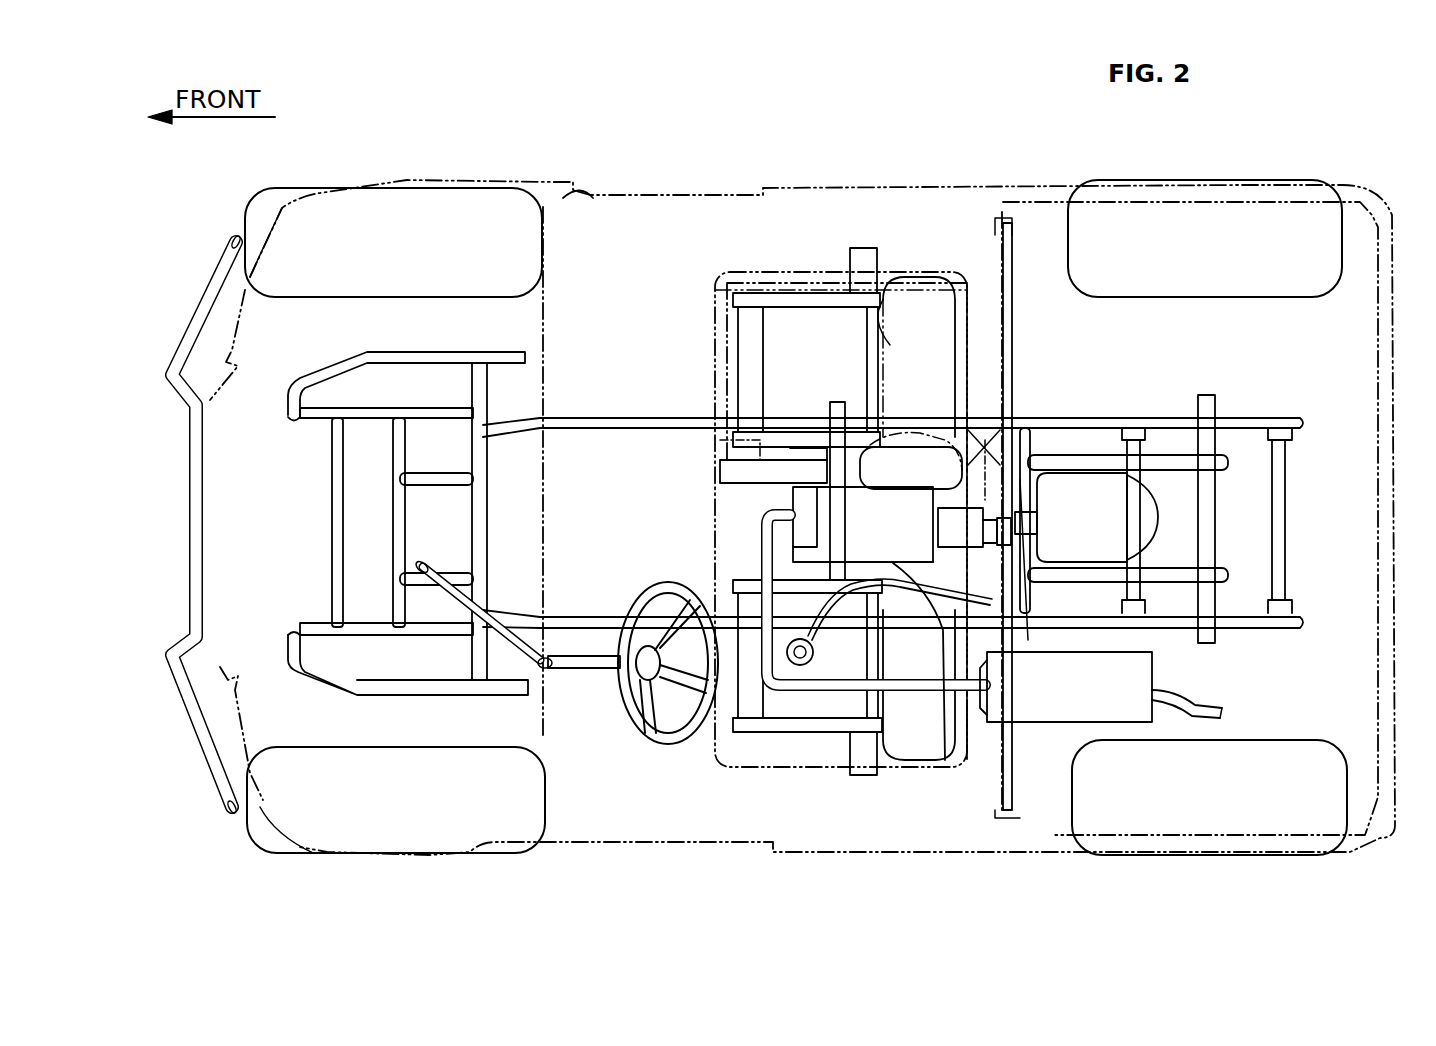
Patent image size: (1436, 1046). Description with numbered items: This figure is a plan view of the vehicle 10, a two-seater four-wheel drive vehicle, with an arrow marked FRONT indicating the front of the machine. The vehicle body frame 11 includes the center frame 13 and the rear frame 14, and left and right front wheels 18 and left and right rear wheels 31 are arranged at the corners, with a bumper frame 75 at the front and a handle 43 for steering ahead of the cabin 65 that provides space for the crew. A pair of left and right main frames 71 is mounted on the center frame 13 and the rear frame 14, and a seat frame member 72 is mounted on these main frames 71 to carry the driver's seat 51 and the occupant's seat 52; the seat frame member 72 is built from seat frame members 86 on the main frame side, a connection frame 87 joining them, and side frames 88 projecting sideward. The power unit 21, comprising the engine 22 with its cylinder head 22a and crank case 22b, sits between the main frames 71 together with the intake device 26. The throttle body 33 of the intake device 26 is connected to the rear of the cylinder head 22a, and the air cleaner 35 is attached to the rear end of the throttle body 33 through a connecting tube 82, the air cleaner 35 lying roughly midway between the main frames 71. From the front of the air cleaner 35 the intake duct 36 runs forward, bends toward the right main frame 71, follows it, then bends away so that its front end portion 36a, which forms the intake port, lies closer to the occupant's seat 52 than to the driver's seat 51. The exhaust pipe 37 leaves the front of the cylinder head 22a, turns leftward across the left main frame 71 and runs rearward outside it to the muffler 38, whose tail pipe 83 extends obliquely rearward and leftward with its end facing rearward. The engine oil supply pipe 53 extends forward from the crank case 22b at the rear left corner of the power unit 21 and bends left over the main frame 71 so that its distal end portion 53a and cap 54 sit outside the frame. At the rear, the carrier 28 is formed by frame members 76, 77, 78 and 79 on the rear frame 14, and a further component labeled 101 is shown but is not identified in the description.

The vehicle 10 is at (433, 160).
The vehicle body frame 11 is at (600, 415).
The center frame 13 is at (660, 415).
The rear frame 14 is at (1150, 410).
The front wheels 18 is at (258, 208).
The power unit 21 is at (783, 508).
The engine 22 is at (902, 455).
The cylinder head 22a is at (998, 467).
The crank case 22b is at (985, 690).
The intake device 26 is at (1160, 522).
The carrier 28 is at (1395, 347).
The rear wheels 31 is at (1340, 200).
The throttle body 33 is at (1022, 510).
The air cleaner 35 is at (1148, 535).
The intake duct 36 is at (717, 490).
The front end portion of intake duct 36a is at (710, 483).
The exhaust pipe 37 is at (770, 547).
The muffler 38 is at (1145, 666).
The handle 43 is at (666, 744).
The driver's seat 51 is at (800, 765).
The occupant's seat 52 is at (780, 290).
The engine oil supply pipe 53 is at (945, 760).
The distal end portion 53a is at (830, 640).
The cap 54 is at (795, 665).
The cabin 65 is at (570, 798).
The main frames 71 is at (680, 420).
The seat frame member 72 is at (805, 293).
The bumper frame 75 is at (180, 390).
The frame member of carrier 76 is at (995, 275).
The frame member of carrier 77 is at (1110, 205).
The frame member of carrier 78 is at (1058, 838).
The frame member of carrier 79 is at (1380, 500).
The connecting tube 82 is at (1022, 560).
The tail pipe 83 is at (1228, 713).
The seat frame members 86 is at (885, 336).
The connection frame 87 is at (838, 402).
The side frame 88 is at (863, 248).
The engine frame outline 101 is at (740, 757).